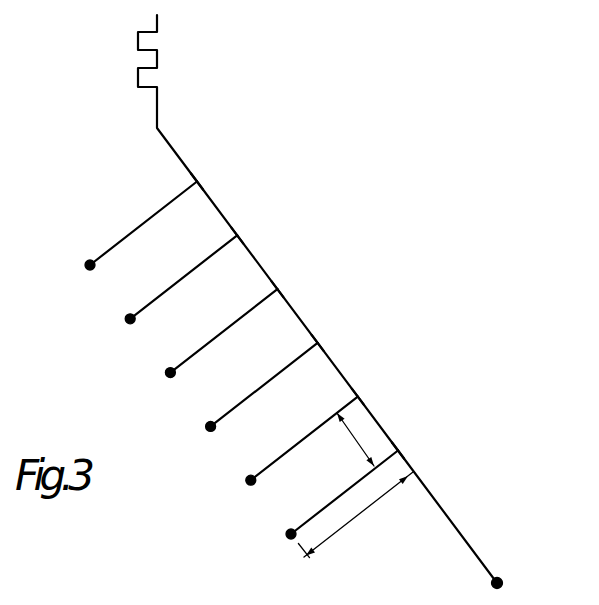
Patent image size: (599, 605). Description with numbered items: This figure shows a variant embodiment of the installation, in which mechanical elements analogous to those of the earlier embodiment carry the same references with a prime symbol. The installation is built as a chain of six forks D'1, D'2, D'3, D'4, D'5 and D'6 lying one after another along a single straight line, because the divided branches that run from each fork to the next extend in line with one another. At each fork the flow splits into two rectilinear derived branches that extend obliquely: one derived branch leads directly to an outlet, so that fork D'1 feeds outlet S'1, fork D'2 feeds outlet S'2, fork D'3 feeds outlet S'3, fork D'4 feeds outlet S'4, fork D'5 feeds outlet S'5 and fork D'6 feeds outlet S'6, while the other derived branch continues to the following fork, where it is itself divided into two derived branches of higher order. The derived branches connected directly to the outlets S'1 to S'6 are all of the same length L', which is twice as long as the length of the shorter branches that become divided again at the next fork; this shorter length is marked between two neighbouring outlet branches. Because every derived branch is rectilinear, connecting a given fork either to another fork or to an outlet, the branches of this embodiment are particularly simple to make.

The fork D'1 is at (208, 159).
The outlet S'1 is at (78, 277).
The fork D'2 is at (248, 212).
The outlet S'2 is at (118, 331).
The fork D'3 is at (288, 266).
The outlet S'3 is at (158, 385).
The fork D'4 is at (329, 320).
The outlet S'4 is at (199, 438).
The fork D'5 is at (369, 374).
The outlet S'5 is at (239, 492).
The fork D'6 is at (409, 428).
The outlet S'6 is at (279, 546).
The length L' is at (355, 515).